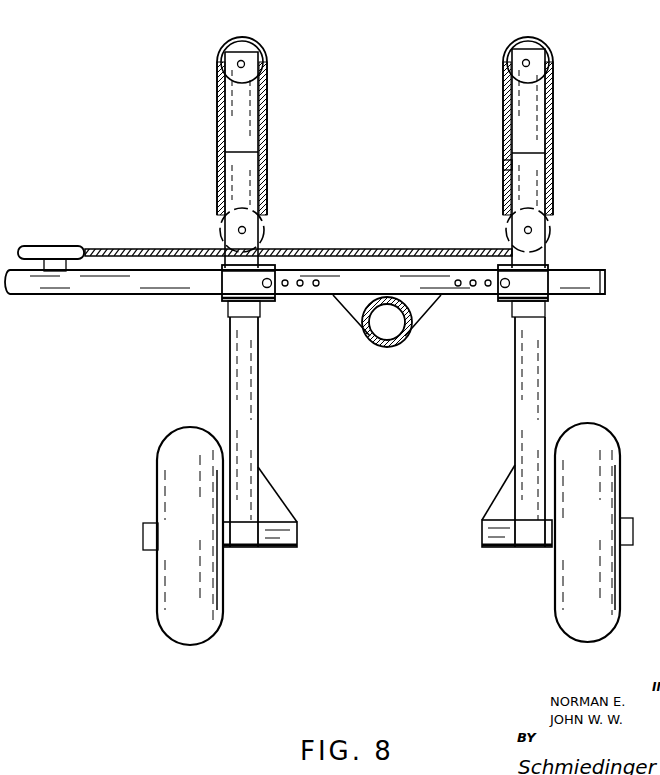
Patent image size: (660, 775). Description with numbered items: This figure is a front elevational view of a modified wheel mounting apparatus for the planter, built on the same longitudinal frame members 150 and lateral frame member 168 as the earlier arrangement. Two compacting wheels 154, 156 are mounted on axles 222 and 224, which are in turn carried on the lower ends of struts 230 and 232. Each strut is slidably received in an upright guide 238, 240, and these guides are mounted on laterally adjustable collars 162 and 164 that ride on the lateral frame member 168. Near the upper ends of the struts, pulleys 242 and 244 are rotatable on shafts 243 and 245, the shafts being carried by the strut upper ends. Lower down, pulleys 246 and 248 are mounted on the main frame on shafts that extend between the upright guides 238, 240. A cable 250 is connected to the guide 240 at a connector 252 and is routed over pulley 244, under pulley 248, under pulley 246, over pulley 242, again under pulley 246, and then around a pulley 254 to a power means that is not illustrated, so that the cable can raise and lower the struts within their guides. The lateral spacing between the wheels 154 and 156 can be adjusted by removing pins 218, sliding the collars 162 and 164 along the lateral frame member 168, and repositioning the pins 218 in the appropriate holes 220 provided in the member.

The longitudinal frame member 150 is at (380, 349).
The compacting wheel 154 is at (223, 600).
The compacting wheel 156 is at (556, 598).
The laterally adjustable collar 162 is at (222, 298).
The laterally adjustable collar 164 is at (549, 298).
The lateral frame member 168 is at (186, 296).
The pin 218 is at (270, 303).
The hole 220 is at (300, 288).
The axle 222 is at (292, 548).
The axle 224 is at (482, 547).
The strut 230 is at (259, 396).
The strut 232 is at (548, 393).
The upright guide 238 is at (257, 150).
The upright guide 240 is at (510, 190).
The pulley 242 is at (262, 56).
The shaft 243 is at (222, 56).
The pulley 244 is at (510, 50).
The shaft 245 is at (537, 52).
The pulley 246 is at (266, 240).
The pulley 248 is at (550, 236).
The cable 250 is at (113, 250).
The connector 252 is at (503, 165).
The pulley 254 is at (60, 247).